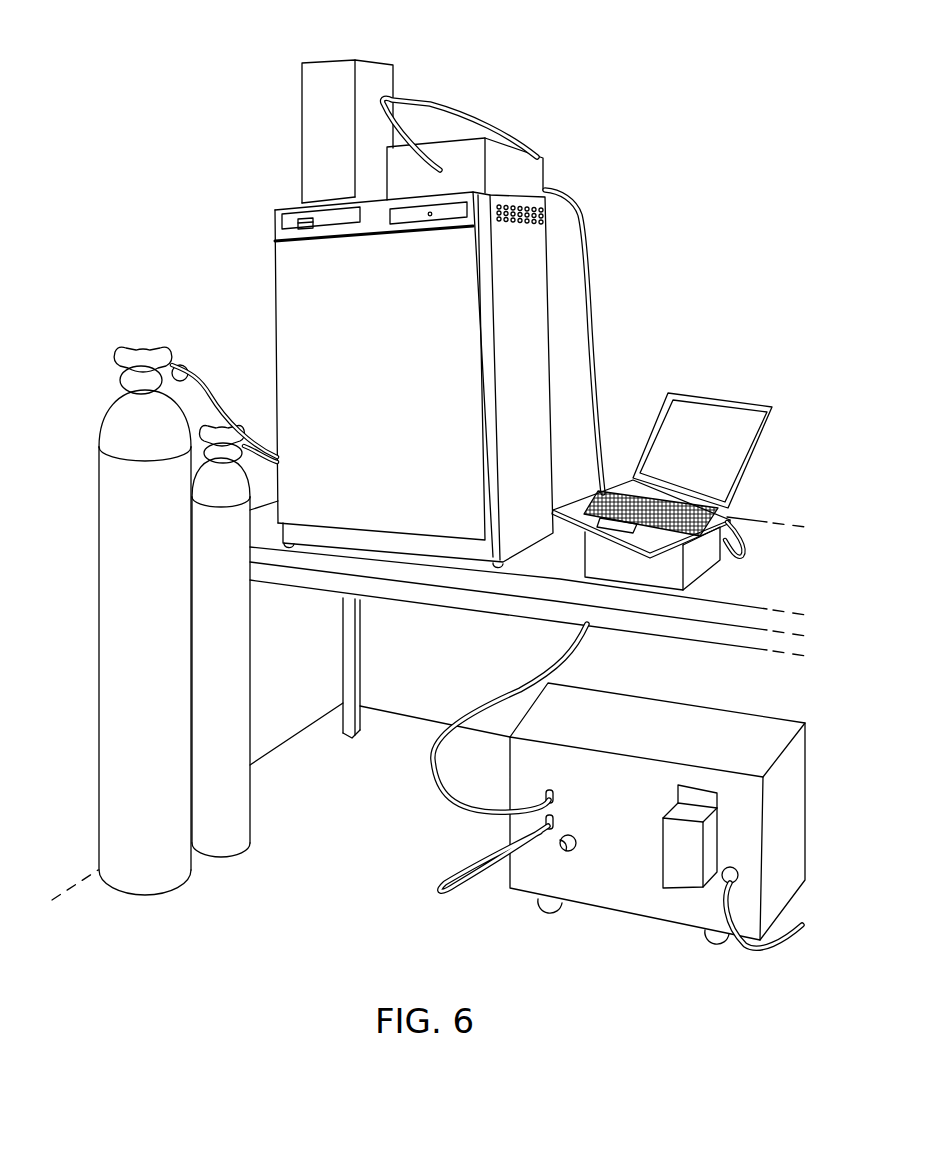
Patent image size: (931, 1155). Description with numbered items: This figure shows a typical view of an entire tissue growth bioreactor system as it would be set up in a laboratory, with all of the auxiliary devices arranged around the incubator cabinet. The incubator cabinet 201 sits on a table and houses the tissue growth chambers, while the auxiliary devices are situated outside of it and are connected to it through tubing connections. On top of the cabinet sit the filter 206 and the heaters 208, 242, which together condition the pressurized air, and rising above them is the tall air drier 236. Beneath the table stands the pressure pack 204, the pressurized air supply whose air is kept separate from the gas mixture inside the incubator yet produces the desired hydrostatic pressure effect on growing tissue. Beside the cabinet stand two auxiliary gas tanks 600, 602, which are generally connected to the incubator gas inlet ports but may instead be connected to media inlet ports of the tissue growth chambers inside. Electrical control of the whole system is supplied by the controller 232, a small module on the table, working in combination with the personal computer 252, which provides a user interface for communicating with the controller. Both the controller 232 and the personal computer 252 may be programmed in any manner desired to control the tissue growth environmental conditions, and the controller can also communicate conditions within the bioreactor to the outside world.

The air drier 236 is at (333, 80).
The filter 206 is at (335, 169).
The heater 208 is at (335, 169).
The heater 242 is at (403, 175).
The incubator cabinet 201 is at (528, 254).
The personal computer 252 is at (720, 397).
The controller 232 is at (600, 566).
The pressure pack 204 is at (625, 900).
The auxiliary gas tank 600 is at (160, 875).
The auxiliary gas tank 602 is at (235, 842).